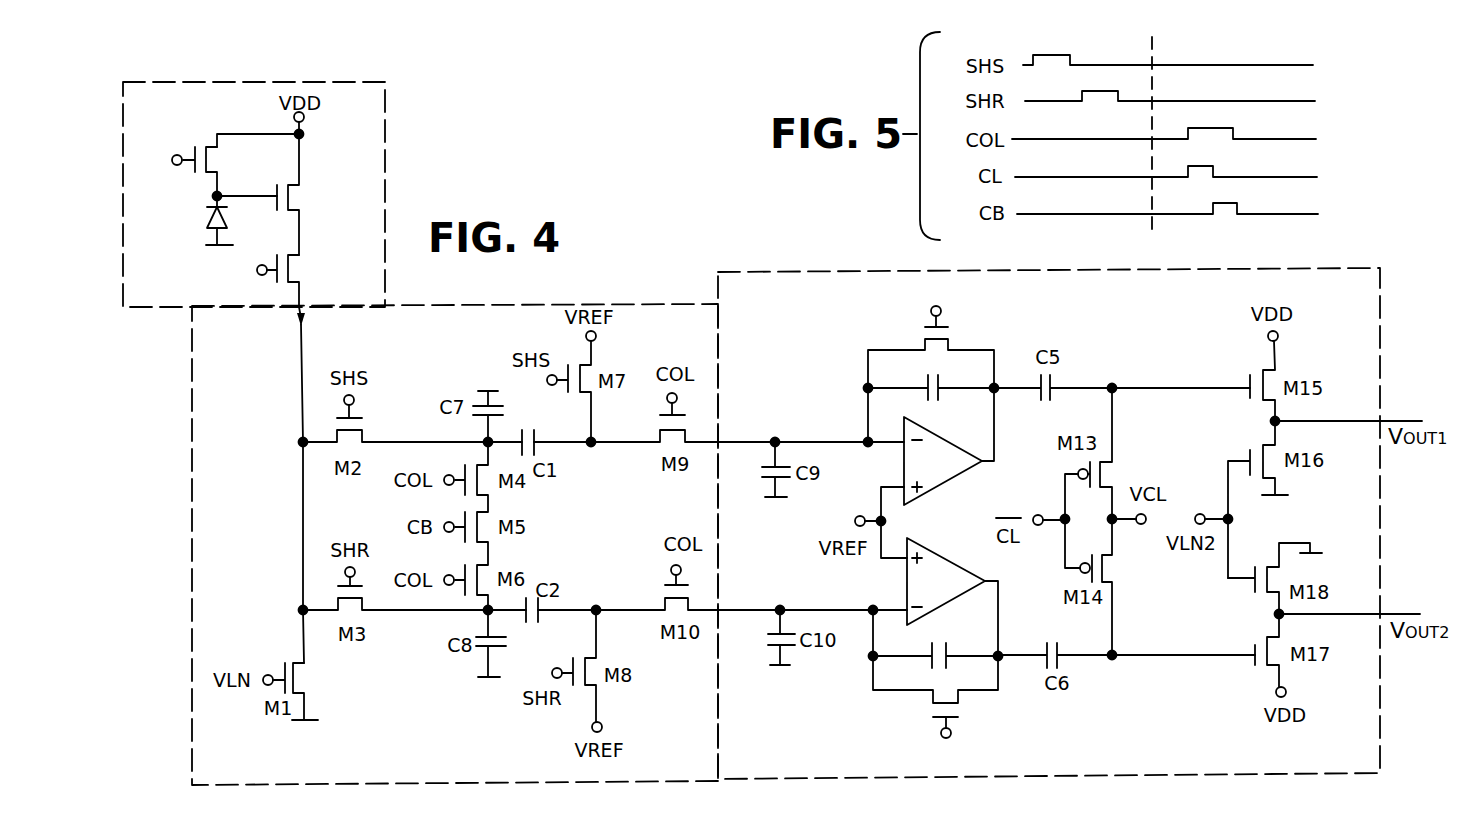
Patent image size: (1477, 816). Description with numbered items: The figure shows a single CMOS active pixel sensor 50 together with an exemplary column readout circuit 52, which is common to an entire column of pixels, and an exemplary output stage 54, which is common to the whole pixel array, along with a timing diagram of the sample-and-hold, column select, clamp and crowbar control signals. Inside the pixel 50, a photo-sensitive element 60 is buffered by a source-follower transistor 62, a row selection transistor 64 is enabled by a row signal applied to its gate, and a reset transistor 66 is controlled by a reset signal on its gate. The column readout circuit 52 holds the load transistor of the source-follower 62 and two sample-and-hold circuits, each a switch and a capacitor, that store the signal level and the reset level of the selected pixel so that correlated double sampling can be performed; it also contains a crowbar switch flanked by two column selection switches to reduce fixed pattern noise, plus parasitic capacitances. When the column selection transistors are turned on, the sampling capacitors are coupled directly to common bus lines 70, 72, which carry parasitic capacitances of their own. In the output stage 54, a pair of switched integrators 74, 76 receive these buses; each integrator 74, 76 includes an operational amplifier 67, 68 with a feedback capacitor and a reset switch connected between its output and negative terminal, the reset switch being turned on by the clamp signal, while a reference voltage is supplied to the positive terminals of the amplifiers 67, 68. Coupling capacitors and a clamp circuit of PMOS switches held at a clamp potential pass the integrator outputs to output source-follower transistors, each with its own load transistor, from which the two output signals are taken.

The active pixel sensor 50 is at (385, 112).
The column readout circuit 52 is at (636, 303).
The output stage 54 is at (758, 270).
The photo-sensitive element 60 is at (194, 225).
The source-follower transistor 62 is at (311, 194).
The row selection transistor 64 is at (311, 262).
The reset transistor 66 is at (210, 126).
The operational amplifier 67 is at (950, 483).
The operational amplifier 68 is at (955, 560).
The bus 70 is at (750, 440).
The bus 72 is at (750, 608).
The switched integrator 74 is at (991, 337).
The switched integrator 76 is at (1006, 709).